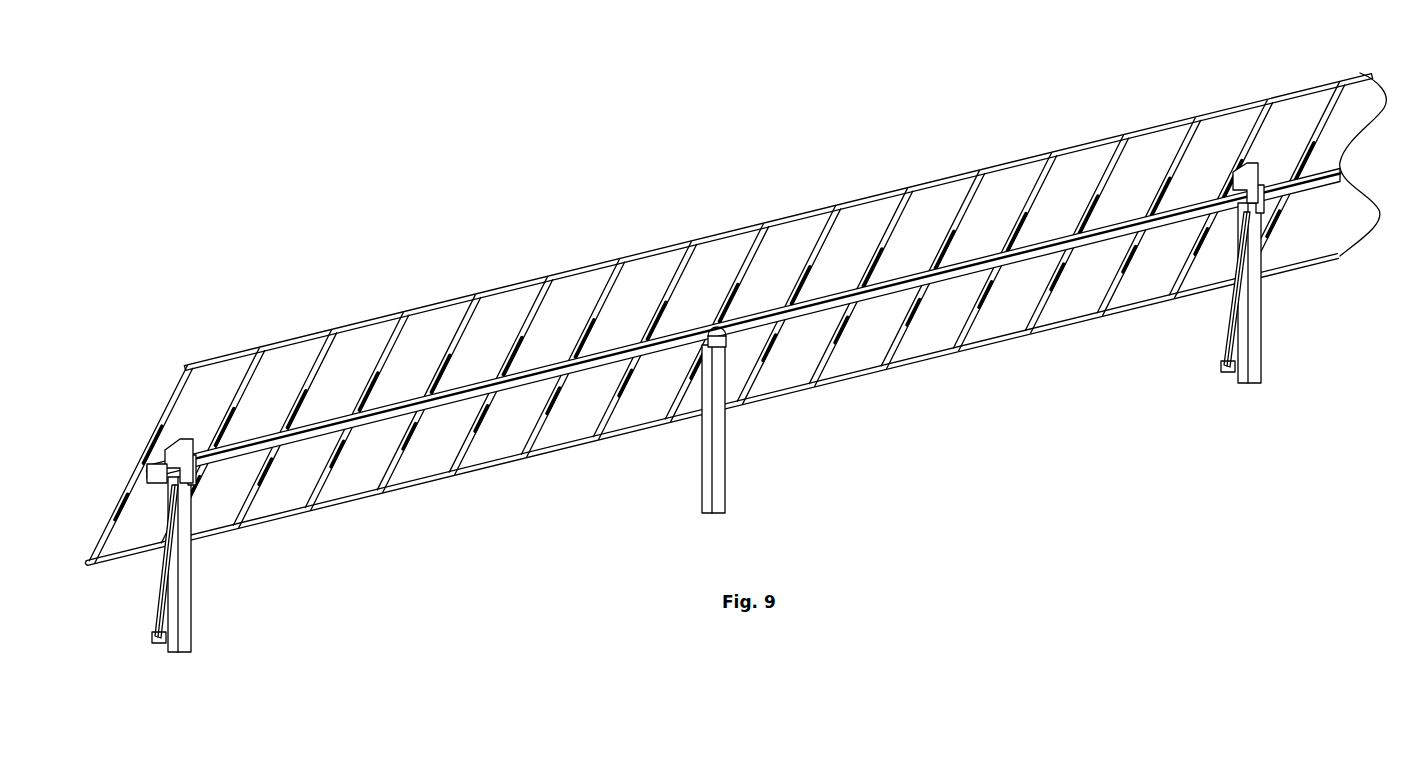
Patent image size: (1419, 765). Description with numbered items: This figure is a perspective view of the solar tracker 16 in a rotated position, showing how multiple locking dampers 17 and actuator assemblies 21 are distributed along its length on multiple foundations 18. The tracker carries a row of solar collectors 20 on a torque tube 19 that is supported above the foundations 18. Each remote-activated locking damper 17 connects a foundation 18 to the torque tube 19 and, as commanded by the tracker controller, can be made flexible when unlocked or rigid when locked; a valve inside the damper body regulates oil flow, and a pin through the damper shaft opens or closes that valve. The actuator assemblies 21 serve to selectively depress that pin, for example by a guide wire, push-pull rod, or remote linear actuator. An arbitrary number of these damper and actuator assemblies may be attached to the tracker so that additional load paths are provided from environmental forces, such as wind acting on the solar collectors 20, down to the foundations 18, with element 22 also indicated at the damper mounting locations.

The solar tracker 16 is at (484, 249).
The locking damper 17 is at (177, 540).
The foundation 18 is at (190, 627).
The torque tube 19 is at (376, 430).
The solar collectors 20 is at (223, 352).
The actuator assembly 21 is at (195, 463).
The mounting bracket 22 is at (178, 449).